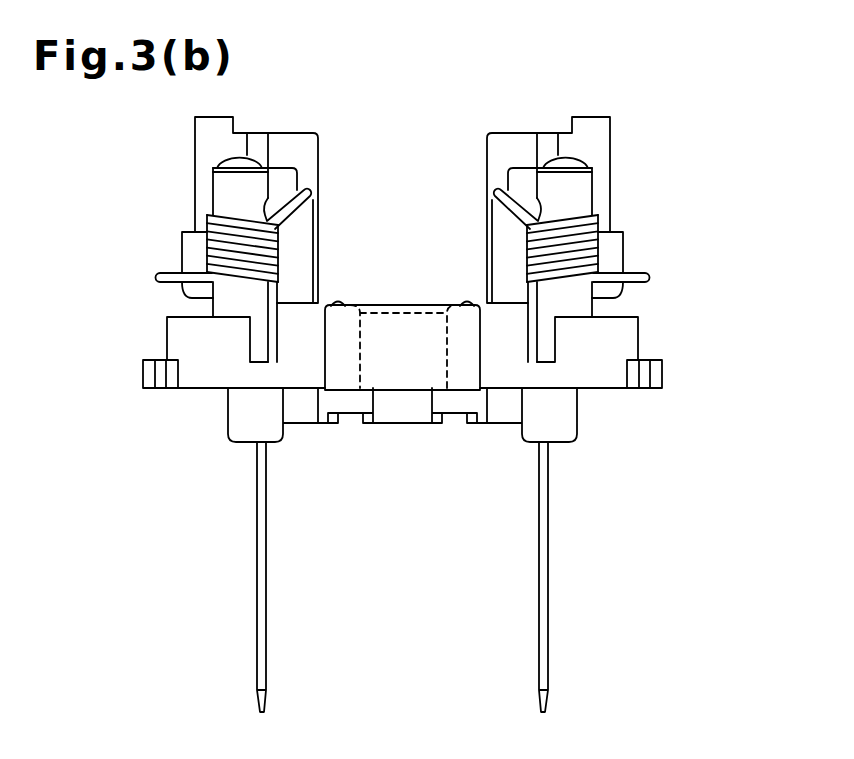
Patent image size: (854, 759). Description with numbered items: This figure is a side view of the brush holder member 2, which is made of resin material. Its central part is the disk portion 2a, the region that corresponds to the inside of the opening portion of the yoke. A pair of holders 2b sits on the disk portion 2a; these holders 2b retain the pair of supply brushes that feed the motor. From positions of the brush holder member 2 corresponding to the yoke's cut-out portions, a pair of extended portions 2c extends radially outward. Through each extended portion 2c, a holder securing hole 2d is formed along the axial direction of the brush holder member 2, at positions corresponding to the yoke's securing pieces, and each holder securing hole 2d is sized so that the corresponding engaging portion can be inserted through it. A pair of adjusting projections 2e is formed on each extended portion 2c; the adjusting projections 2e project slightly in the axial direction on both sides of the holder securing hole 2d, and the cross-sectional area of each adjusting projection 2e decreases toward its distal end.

The brush holder member 2 is at (723, 224).
The disk portion 2a is at (620, 335).
The holder 2b is at (192, 240).
The extended portion 2c is at (407, 372).
The holder securing hole 2d is at (445, 367).
The adjusting projection 2e is at (338, 303).